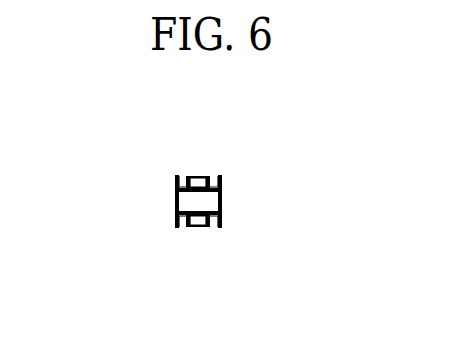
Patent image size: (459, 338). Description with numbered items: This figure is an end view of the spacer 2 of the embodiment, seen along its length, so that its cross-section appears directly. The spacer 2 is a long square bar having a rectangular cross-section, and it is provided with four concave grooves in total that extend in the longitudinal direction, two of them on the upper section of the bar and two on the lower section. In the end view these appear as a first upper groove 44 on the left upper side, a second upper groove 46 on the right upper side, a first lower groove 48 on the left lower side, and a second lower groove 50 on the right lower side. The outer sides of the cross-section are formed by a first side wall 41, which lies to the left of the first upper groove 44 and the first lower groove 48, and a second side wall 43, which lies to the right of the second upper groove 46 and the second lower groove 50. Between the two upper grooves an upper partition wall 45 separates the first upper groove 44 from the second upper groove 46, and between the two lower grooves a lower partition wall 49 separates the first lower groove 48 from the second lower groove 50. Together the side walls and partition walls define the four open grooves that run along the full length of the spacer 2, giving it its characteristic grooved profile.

The spacer 2 is at (230, 180).
The first side wall 41 is at (175, 199).
The second side wall 43 is at (222, 201).
The first upper groove 44 is at (183, 186).
The upper partition wall 45 is at (198, 185).
The second upper groove 46 is at (213, 186).
The first lower groove 48 is at (183, 226).
The lower partition wall 49 is at (200, 227).
The second lower groove 50 is at (210, 227).